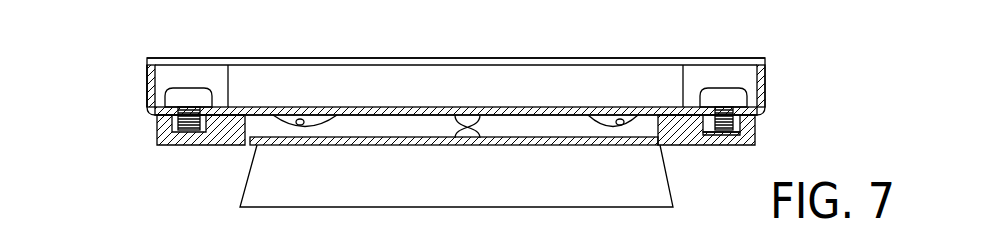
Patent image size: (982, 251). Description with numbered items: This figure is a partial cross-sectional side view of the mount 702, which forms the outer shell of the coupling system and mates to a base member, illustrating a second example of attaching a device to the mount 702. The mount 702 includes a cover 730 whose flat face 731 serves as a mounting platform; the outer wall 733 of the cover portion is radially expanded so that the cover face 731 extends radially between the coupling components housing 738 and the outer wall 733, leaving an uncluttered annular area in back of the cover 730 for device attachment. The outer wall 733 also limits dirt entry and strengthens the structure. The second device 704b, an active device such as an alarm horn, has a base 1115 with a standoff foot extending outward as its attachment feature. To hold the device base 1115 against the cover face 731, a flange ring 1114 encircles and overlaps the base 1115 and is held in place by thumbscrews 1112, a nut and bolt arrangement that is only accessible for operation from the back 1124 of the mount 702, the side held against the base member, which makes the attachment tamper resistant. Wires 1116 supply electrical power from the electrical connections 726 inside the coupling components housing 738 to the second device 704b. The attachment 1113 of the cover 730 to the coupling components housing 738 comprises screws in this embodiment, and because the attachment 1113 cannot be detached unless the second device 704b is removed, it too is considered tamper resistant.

The mount 702 is at (236, 39).
The cover 730 is at (147, 58).
The outer wall 733 is at (147, 98).
The electrical connections 726 is at (546, 39).
The coupling components housing 738 is at (425, 85).
The back 1124 is at (288, 38).
The thumbscrews 1112 is at (177, 90).
The attachment 1113 is at (333, 99).
The flange ring 1114 is at (750, 133).
The base 1115 is at (212, 130).
The face 731 is at (410, 115).
The wires 1116 is at (478, 130).
The second device 704b is at (693, 187).